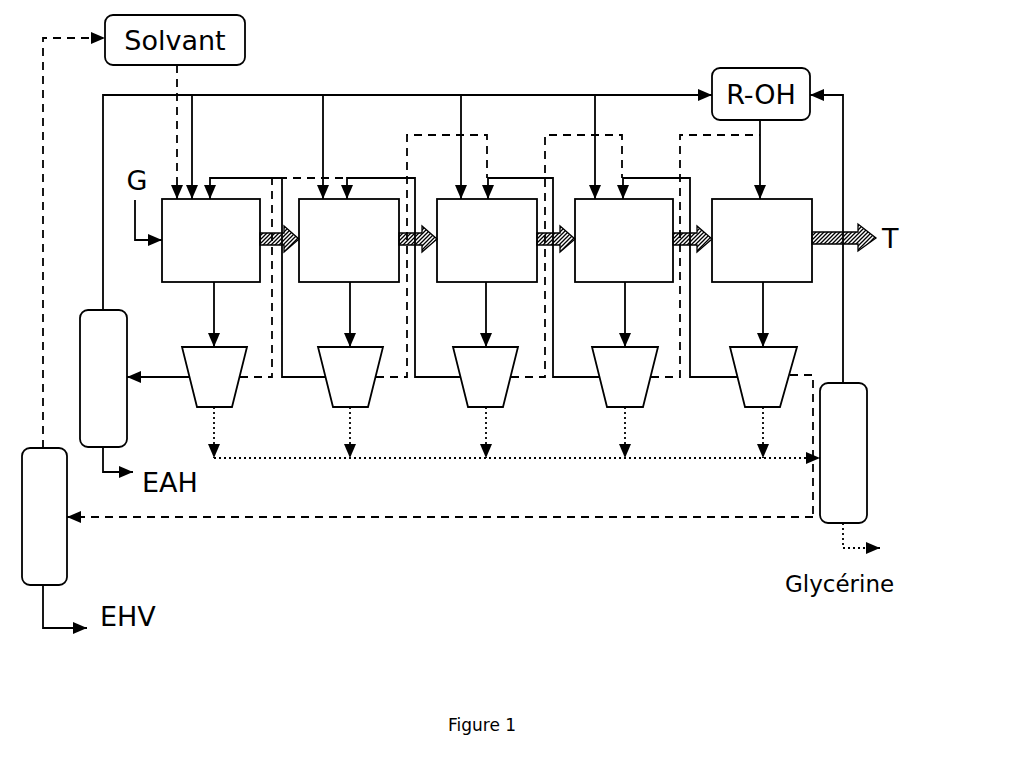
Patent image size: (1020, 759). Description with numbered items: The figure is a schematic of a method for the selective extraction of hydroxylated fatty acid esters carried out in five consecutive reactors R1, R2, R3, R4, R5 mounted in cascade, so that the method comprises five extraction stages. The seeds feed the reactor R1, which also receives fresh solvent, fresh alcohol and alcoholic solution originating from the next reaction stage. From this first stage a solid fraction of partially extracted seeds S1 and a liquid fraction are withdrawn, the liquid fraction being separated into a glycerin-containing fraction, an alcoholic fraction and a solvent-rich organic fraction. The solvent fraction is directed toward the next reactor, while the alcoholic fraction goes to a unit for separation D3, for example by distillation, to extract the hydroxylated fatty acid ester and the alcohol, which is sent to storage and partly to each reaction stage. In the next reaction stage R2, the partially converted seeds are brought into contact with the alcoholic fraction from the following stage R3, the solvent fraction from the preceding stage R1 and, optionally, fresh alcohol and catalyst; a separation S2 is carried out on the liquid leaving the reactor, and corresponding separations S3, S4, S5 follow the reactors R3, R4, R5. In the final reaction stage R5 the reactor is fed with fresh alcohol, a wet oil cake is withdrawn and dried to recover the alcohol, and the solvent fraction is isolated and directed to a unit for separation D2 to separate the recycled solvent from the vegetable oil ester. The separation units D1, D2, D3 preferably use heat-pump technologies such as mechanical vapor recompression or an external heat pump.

The reactor R1 is at (211, 240).
The reaction stage R2 is at (349, 240).
The reaction stage R3 is at (487, 240).
The reactor R4 is at (624, 240).
The final reaction stage R5 is at (762, 240).
The solid fraction S1 is at (187, 370).
The separation S2 is at (350, 370).
The separation S3 is at (485, 370).
The separation S4 is at (625, 370).
The separation S5 is at (763, 370).
The separation unit D1 is at (850, 465).
The unit for separation D2 is at (54, 538).
The unit for separation D3 is at (106, 391).